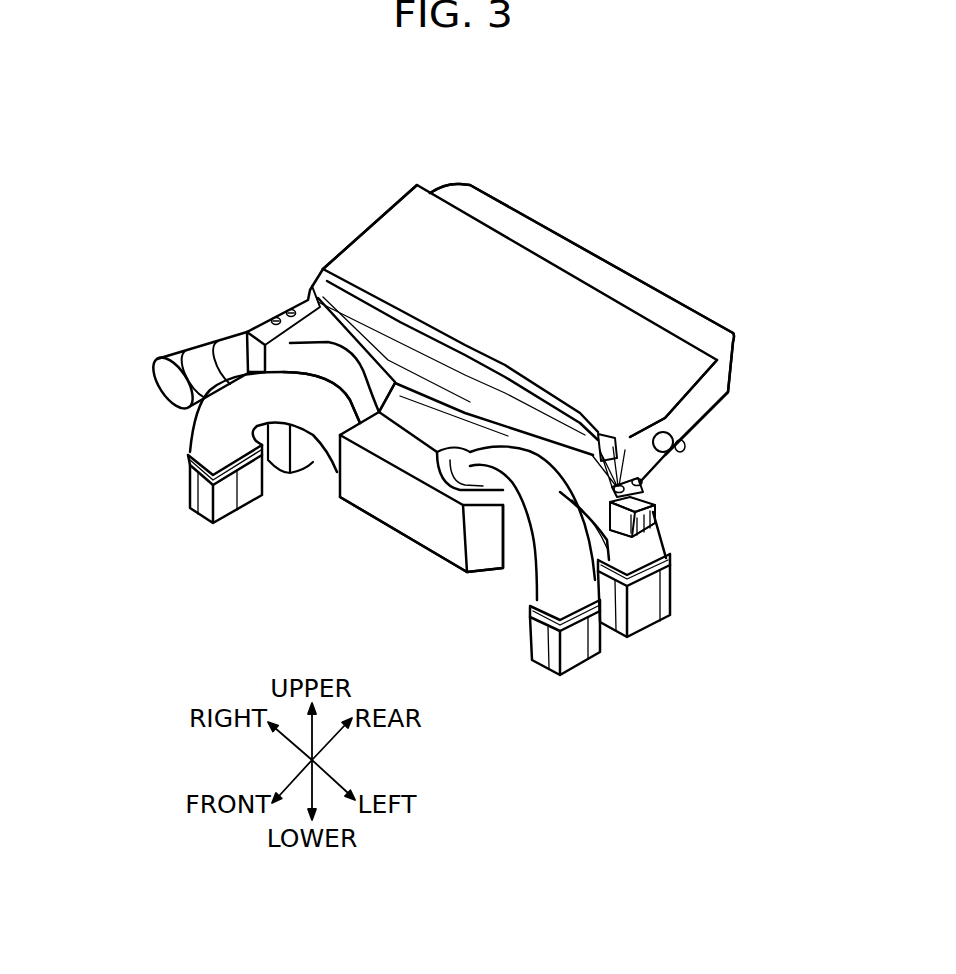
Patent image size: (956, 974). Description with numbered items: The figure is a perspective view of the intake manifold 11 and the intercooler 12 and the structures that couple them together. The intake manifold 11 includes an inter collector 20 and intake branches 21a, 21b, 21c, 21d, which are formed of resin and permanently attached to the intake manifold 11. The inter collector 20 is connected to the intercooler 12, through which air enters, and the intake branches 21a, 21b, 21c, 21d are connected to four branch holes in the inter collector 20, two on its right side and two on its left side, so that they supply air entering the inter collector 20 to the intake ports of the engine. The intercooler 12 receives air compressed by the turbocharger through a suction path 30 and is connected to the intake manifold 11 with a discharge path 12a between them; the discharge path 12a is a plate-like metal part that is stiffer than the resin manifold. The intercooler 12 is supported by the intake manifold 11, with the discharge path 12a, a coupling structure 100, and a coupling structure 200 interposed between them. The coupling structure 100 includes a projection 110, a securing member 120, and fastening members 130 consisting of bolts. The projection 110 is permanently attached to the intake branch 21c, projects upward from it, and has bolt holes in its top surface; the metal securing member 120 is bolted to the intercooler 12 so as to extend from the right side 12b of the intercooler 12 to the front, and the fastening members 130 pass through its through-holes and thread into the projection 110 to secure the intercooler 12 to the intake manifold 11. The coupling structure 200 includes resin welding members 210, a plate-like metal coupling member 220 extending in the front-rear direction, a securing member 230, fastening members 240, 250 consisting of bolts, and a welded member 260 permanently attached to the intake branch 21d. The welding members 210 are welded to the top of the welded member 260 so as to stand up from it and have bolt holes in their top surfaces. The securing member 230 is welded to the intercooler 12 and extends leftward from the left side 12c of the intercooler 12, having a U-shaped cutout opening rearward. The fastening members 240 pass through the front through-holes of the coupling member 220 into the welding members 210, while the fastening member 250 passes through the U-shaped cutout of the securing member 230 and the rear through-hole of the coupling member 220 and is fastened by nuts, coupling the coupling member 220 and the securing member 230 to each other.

The intake manifold 11 is at (408, 568).
The intercooler 12 is at (407, 150).
The discharge path 12a is at (413, 430).
The right side of the intercooler 12b is at (373, 225).
The left side of the intercooler 12c is at (700, 390).
The inter collector 20 is at (400, 540).
The intake branch 21a is at (200, 427).
The intake branch 21b is at (533, 580).
The intake branch 21c is at (337, 370).
The intake branch 21d is at (663, 543).
The suction path 30 is at (165, 360).
The coupling structure 100 is at (264, 258).
The projection 110 is at (247, 348).
The securing member 120 is at (273, 318).
The fastening members 130 is at (288, 310).
The coupling structure 200 is at (679, 425).
The welding members 210 is at (655, 510).
The coupling member 220 is at (652, 482).
The securing member 230 is at (660, 423).
The fastening members 240 is at (617, 435).
The fastening member 250 is at (683, 457).
The welded member 260 is at (660, 522).